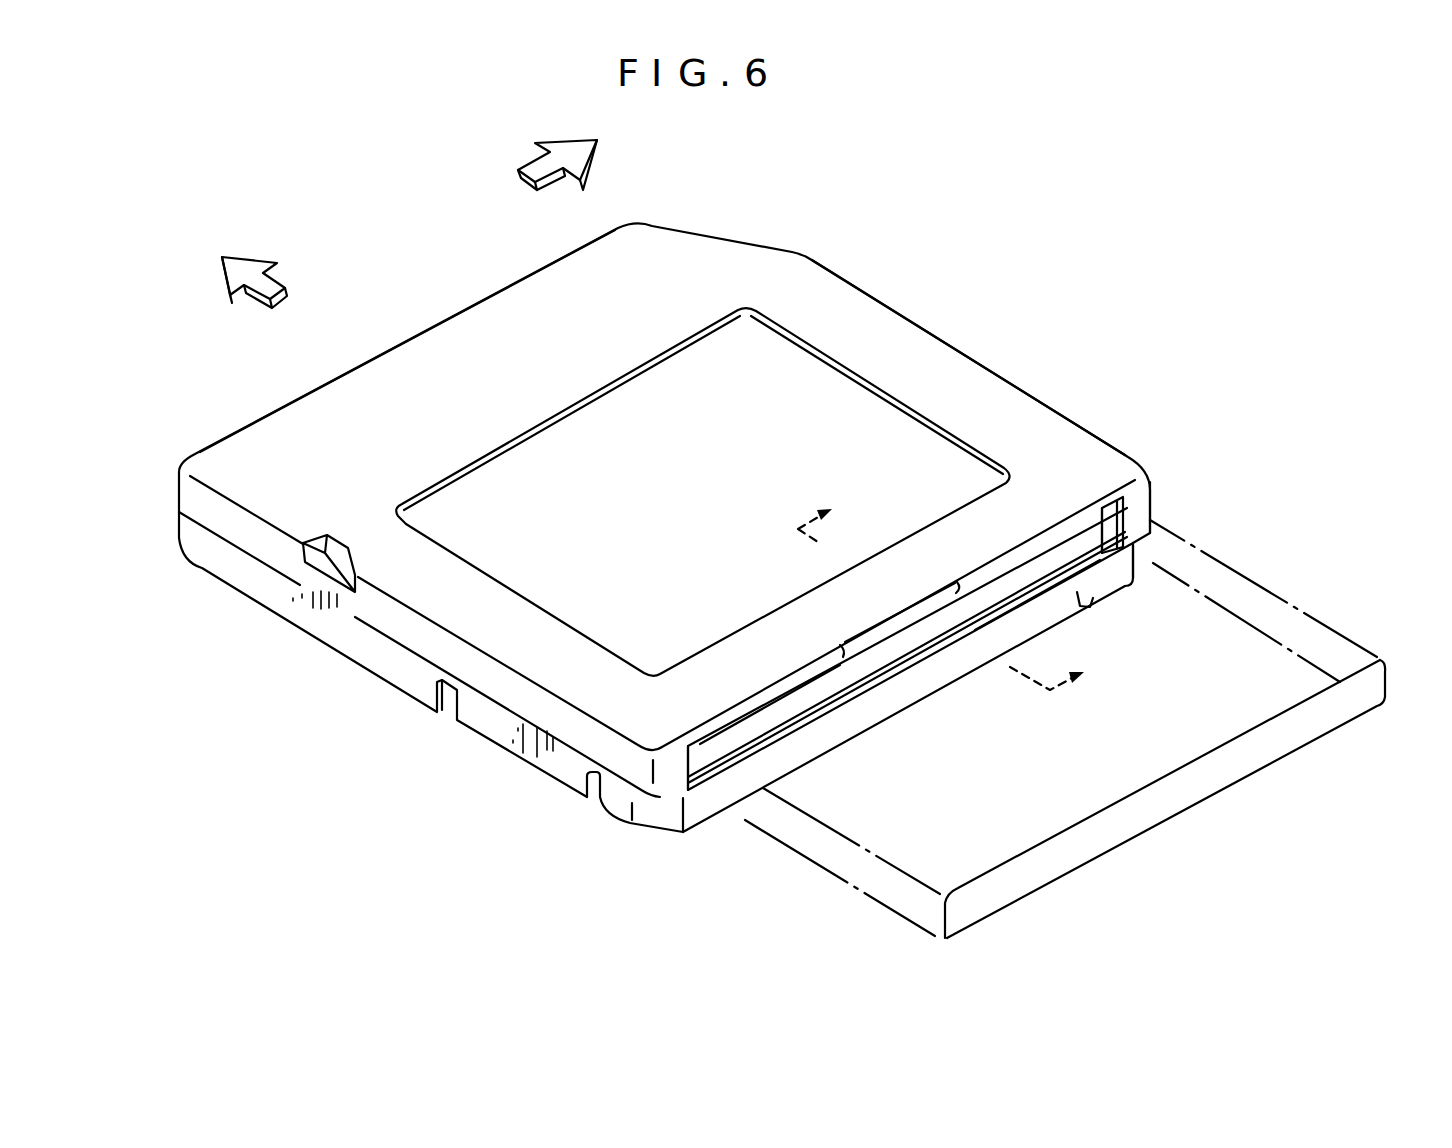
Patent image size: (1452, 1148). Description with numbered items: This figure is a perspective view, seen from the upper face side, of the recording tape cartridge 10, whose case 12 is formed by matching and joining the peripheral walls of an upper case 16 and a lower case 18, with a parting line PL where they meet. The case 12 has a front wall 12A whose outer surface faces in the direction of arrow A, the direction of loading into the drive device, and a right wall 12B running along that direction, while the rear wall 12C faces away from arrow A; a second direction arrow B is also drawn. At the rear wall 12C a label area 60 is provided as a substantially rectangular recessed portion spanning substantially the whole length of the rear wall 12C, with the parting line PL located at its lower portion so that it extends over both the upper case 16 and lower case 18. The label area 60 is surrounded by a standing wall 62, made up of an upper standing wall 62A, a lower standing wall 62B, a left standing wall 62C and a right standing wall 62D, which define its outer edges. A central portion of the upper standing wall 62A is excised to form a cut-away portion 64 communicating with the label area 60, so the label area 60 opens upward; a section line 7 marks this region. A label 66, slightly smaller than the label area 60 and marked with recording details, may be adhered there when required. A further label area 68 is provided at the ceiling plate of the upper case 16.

The recording tape cartridge 10 is at (876, 178).
The case 12 is at (1226, 440).
The front wall 12A is at (442, 311).
The right wall 12B is at (998, 375).
The rear wall 12C is at (714, 785).
The upper case 16 is at (1155, 499).
The lower case 18 is at (1135, 563).
The label area 60 is at (862, 664).
The standing wall 62 is at (1103, 790).
The upper standing wall 62A is at (817, 668).
The lower standing wall 62B is at (993, 632).
The left standing wall 62C is at (700, 753).
The right standing wall 62D is at (1105, 545).
The cut-away portion 64 is at (900, 614).
The label 66 is at (1178, 797).
The label area 68 is at (853, 389).
The parting line PL is at (1043, 573).
The section line for FIG. 7 is at (955, 582).
The direction of arrow A is at (257, 264).
The direction of arrow B is at (571, 150).